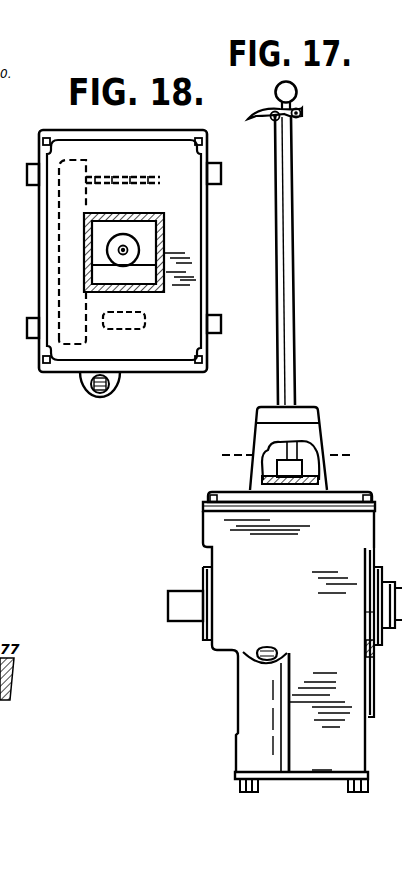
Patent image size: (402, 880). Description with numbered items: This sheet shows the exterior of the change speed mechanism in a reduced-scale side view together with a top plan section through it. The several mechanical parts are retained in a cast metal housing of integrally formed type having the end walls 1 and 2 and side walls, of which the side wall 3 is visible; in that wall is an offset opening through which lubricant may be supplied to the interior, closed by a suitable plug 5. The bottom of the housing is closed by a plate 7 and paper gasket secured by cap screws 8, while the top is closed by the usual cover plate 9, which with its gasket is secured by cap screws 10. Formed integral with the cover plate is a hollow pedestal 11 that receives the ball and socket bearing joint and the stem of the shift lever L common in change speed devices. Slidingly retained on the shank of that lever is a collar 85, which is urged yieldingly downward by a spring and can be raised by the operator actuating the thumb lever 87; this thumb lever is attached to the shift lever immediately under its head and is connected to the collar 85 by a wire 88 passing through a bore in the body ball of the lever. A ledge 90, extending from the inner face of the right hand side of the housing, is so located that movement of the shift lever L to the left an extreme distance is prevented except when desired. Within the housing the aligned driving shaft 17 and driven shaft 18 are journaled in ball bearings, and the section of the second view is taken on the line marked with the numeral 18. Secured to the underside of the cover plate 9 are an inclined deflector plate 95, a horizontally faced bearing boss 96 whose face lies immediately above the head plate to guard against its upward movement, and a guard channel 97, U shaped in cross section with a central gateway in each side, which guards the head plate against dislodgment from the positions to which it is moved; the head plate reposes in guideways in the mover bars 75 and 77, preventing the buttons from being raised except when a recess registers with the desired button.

In FIG. 17, the end wall 1 is at (375, 538).
In FIG. 17, the end wall 2 is at (203, 535).
In FIG. 17, the side wall 3 is at (248, 640).
In FIG. 17, the plug 5 is at (272, 648).
In FIG. 17, the plate 7 is at (306, 778).
In FIG. 17, the cap screws 8 is at (247, 792).
In FIG. 18, the cover plate 9 is at (158, 355).
In FIG. 17, the cover plate 9 is at (227, 492).
In FIG. 18, the cap screws 10 is at (43, 363).
In FIG. 17, the cap screws 10 is at (205, 499).
In FIG. 18, the hollow pedestal 11 is at (83, 233).
In FIG. 17, the hollow pedestal 11 is at (320, 433).
In FIG. 17, the driving shaft 17 is at (400, 630).
In FIG. 17, the driven shaft 18 is at (176, 640).
In FIG. 18, the mover bar 75 is at (213, 184).
In FIG. 18, the mover bar 77 is at (216, 334).
In FIG. 18, the collar 85 is at (128, 238).
In FIG. 17, the collar 85 is at (296, 470).
In FIG. 17, the thumb lever 87 is at (260, 117).
In FIG. 17, the wire 88 is at (276, 200).
In FIG. 18, the ledge 90 is at (103, 273).
In FIG. 17, the ledge 90 is at (271, 478).
In FIG. 18, the inclined deflector plate 95 is at (53, 207).
In FIG. 18, the bearing boss 96 is at (115, 325).
In FIG. 18, the guard channel 97 is at (130, 178).
In FIG. 17, the shift lever L is at (296, 262).